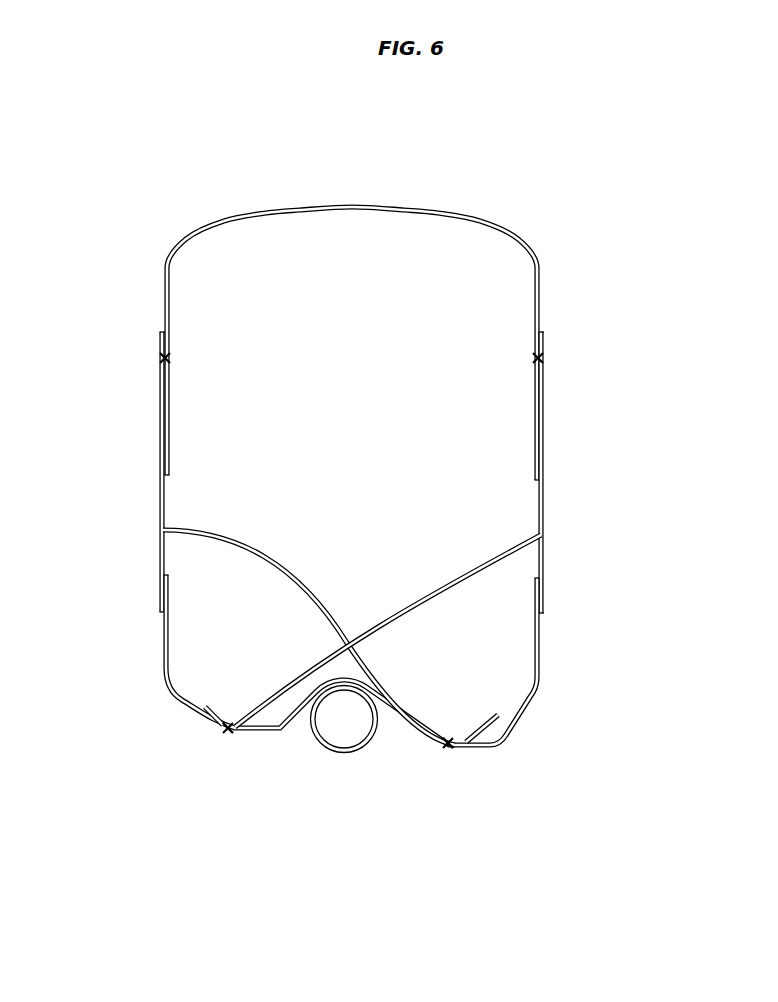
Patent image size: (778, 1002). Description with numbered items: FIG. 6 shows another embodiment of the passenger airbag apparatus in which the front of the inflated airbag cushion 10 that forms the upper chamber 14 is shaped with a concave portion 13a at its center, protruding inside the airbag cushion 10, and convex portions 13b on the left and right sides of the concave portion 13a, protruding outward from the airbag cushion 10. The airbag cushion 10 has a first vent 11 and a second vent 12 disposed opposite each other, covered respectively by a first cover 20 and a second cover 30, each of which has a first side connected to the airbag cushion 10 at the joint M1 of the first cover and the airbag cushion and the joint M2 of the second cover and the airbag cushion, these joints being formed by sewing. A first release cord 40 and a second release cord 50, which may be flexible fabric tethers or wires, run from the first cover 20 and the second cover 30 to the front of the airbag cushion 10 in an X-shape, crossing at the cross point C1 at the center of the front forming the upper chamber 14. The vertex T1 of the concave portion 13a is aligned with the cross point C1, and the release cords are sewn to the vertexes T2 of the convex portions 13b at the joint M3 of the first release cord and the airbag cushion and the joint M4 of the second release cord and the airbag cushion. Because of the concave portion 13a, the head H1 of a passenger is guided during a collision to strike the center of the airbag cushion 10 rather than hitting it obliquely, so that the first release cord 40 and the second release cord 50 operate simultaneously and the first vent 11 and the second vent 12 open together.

The airbag cushion 10 is at (557, 216).
The upper chamber 14 is at (356, 263).
The second vent 12 is at (161, 483).
The first vent 11 is at (543, 484).
The second cover 30 is at (161, 506).
The first cover 20 is at (542, 508).
The second release cord 50 is at (243, 545).
The first release cord 40 is at (483, 563).
The concave portion 13a is at (382, 714).
The convex portions 13b is at (192, 705).
The head of a passenger H1 is at (330, 754).
The cross point C1 is at (346, 642).
The vertex of the concave portion T1 is at (345, 646).
The vertexes of the convex portions T2 is at (338, 735).
The joint of the first cover and the airbag cushion M1 is at (540, 358).
The joint of the second cover and the airbag cushion M2 is at (163, 358).
The joint of the first release cord and the airbag cushion M3 is at (227, 731).
The joint of the second release cord and the airbag cushion M4 is at (448, 748).